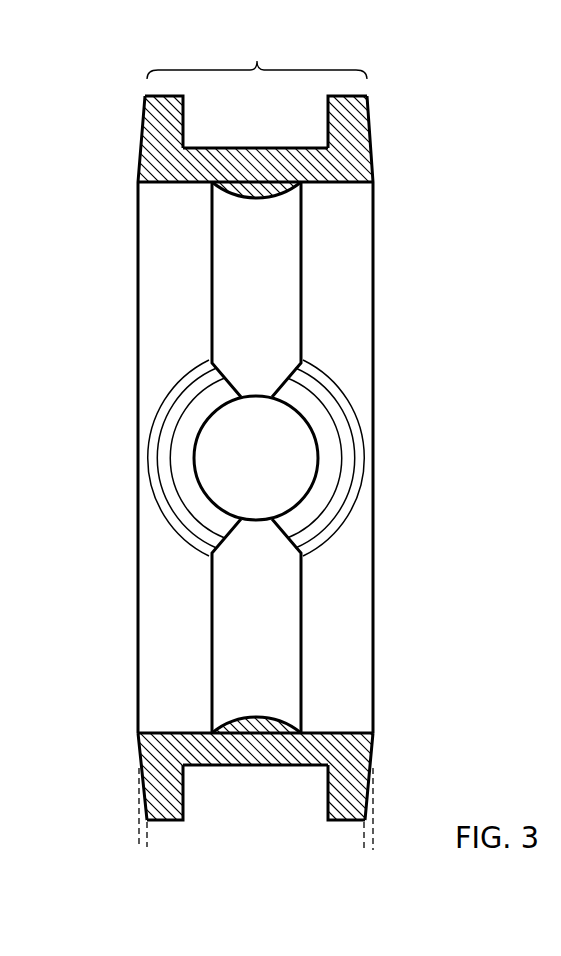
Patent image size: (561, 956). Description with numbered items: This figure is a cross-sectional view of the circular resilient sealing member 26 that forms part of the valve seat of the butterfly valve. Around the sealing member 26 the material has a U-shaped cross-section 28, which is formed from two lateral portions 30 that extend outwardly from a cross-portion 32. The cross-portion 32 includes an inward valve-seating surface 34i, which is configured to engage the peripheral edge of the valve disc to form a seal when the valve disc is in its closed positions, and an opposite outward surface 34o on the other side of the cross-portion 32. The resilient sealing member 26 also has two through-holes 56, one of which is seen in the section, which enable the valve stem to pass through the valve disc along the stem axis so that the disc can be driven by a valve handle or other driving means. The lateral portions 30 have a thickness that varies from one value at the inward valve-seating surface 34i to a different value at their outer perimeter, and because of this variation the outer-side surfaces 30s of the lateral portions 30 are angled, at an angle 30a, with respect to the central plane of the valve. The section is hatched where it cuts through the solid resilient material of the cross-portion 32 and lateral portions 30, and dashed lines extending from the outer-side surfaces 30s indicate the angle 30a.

The circular resilient sealing member 26 is at (410, 265).
The U-shaped cross-section 28 is at (257, 55).
The lateral portions 30 is at (153, 122).
The outer-side surfaces 30s is at (137, 166).
The angle 30a is at (147, 841).
The cross-portion 32 is at (198, 163).
The inward valve-seating surface 34i is at (232, 200).
The outward surface 34o is at (263, 148).
The through-holes 56 is at (318, 465).